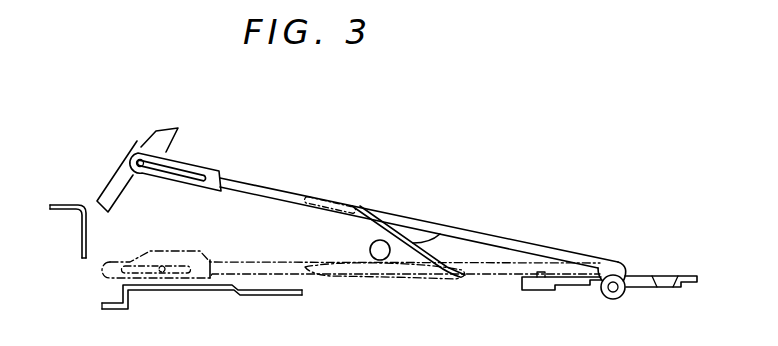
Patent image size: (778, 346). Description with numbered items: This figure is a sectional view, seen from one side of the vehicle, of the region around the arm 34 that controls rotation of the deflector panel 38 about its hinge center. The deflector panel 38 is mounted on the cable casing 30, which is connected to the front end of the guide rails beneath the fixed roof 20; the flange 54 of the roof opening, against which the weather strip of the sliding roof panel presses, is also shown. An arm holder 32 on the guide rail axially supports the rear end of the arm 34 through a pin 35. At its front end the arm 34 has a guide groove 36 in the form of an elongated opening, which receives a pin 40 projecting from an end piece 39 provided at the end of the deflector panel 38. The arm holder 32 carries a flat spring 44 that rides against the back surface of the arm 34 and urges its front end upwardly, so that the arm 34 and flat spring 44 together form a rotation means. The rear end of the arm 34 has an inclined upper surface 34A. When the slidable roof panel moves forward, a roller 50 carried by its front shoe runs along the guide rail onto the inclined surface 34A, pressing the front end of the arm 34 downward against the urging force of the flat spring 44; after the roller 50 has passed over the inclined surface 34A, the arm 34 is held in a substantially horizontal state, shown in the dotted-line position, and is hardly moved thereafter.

The fixed roof 20 is at (53, 203).
The flange 54 is at (93, 235).
The cable casing 30 is at (248, 293).
The arm holder 32 is at (643, 288).
The arm 34 is at (247, 183).
The inclined upper surface 34A is at (596, 256).
The pin 35 is at (605, 292).
The guide groove 36 is at (187, 157).
The deflector panel 38 is at (118, 160).
The end piece 39 is at (165, 137).
The pin 40 is at (147, 153).
The flat spring 44 is at (442, 234).
The roller 50 is at (397, 222).